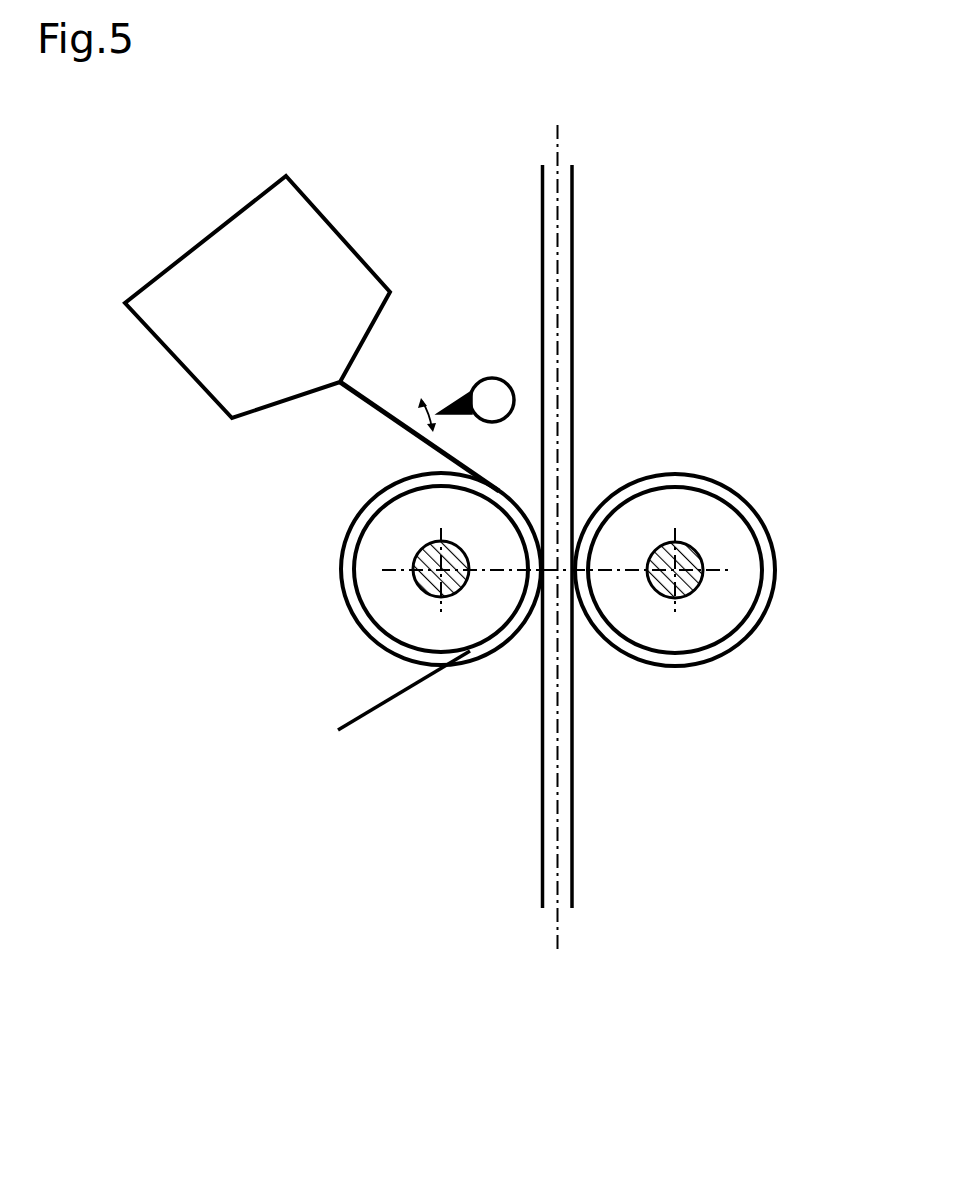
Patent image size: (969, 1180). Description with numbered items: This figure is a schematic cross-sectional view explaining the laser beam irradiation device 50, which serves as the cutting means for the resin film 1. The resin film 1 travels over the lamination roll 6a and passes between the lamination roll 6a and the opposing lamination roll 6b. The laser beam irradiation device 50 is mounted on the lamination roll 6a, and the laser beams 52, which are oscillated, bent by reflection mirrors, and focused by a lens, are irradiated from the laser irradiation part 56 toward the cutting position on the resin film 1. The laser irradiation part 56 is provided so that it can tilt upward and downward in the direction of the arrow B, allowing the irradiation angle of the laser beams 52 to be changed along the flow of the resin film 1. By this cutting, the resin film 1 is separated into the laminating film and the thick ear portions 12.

The resin film 1 is at (363, 403).
The arrow B is at (417, 417).
The laser beam irradiation device 50 is at (539, 334).
The laser beams 52 is at (452, 406).
The laser irradiation part 56 is at (515, 392).
The lamination roll 6a is at (385, 595).
The lamination roll 6b is at (742, 592).
The ear portions 12 is at (385, 706).